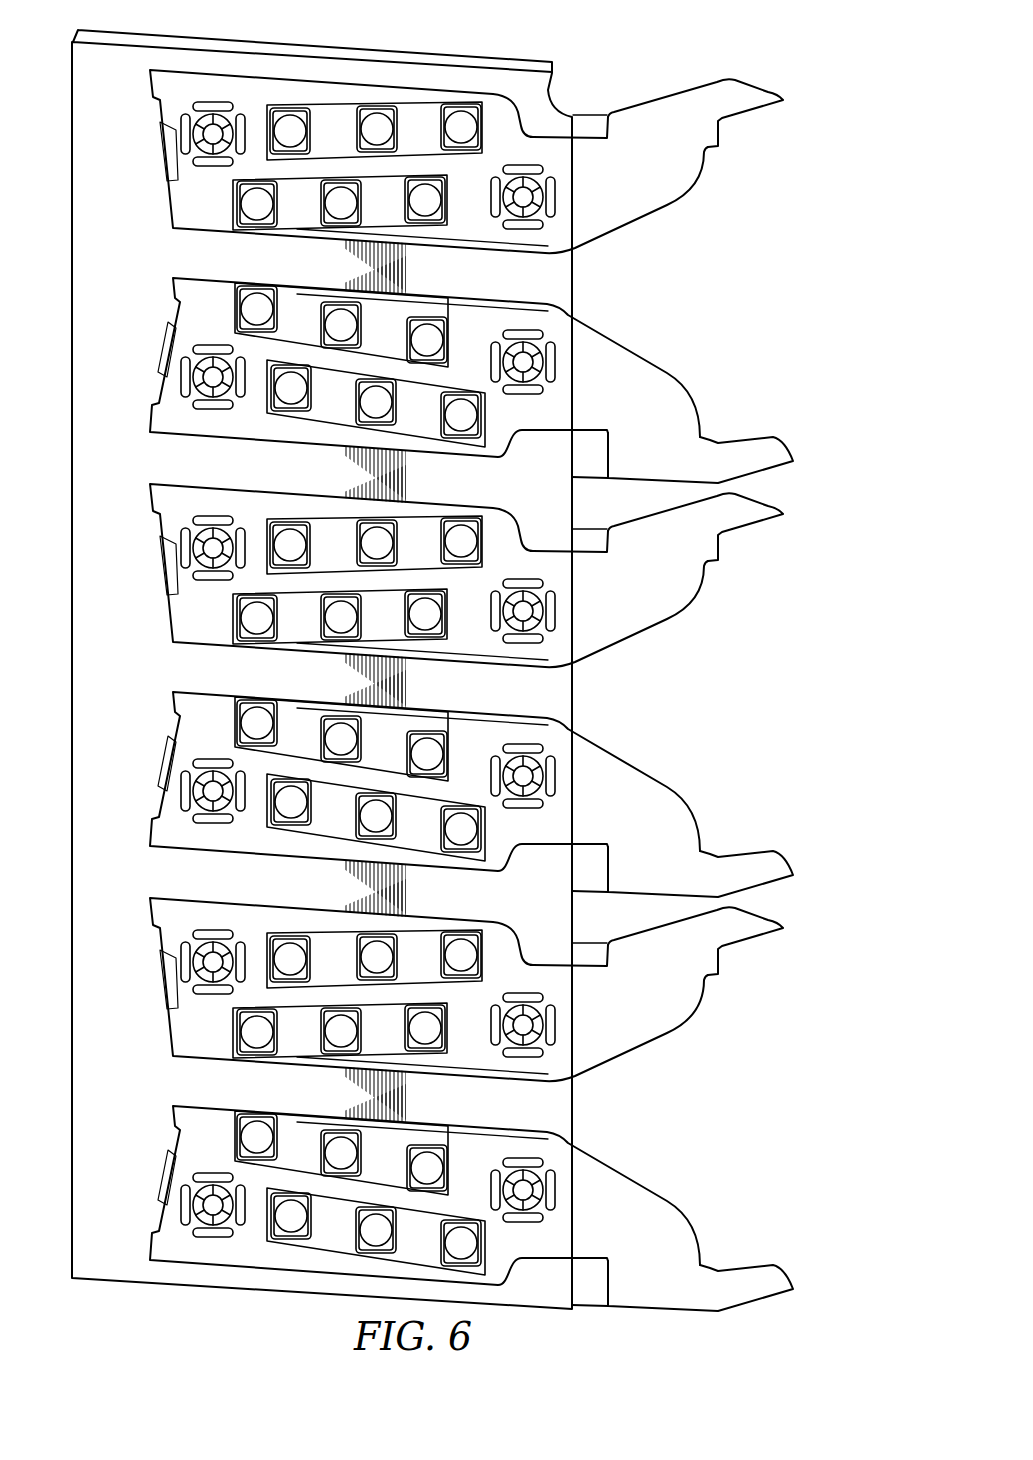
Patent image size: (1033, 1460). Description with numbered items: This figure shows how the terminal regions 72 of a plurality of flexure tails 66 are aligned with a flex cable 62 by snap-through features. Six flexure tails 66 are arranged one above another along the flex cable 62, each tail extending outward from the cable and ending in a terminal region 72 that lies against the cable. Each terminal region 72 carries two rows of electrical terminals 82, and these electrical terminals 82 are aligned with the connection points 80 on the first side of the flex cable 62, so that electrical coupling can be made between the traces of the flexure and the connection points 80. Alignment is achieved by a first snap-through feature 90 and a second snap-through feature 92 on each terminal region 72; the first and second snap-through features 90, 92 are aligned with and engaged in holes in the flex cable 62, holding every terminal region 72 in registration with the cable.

The flex cable 62 is at (553, 692).
The flexure tail 66 is at (732, 92).
The terminal region 72 is at (648, 182).
The connection point 80 is at (372, 820).
The electrical terminal 82 is at (467, 106).
The first snap-through feature 90 is at (574, 183).
The second snap-through feature 92 is at (210, 86).